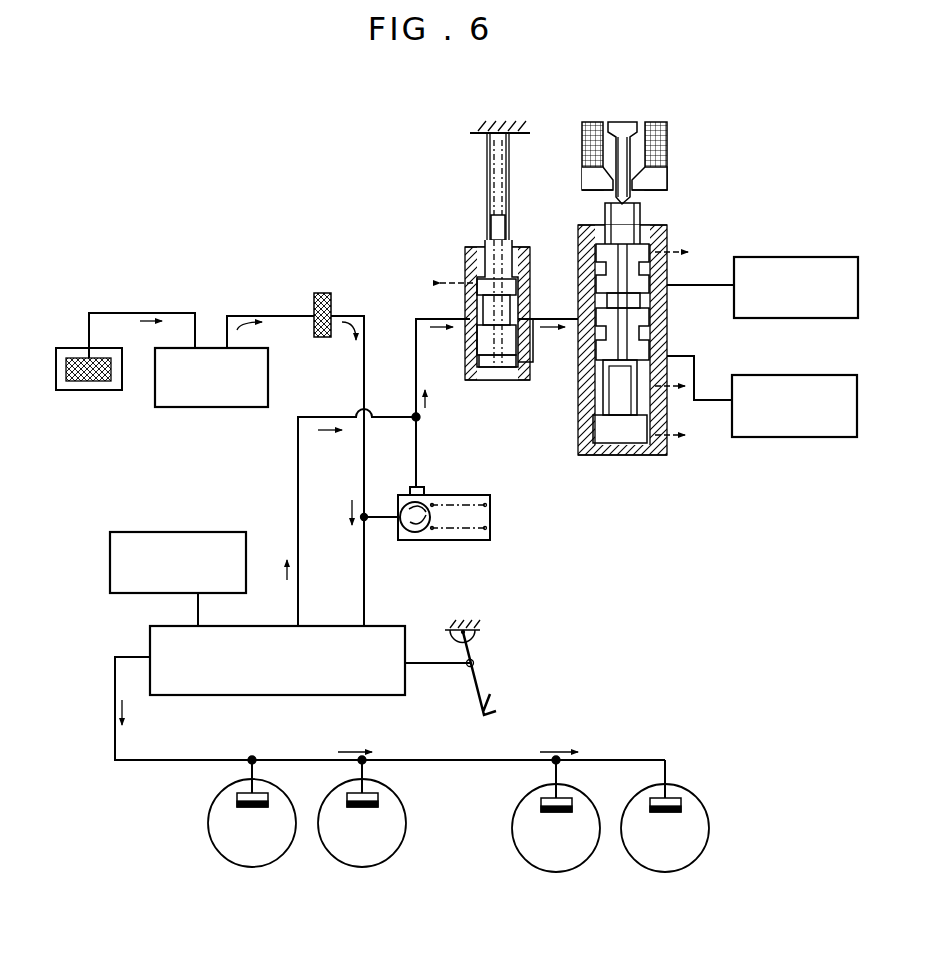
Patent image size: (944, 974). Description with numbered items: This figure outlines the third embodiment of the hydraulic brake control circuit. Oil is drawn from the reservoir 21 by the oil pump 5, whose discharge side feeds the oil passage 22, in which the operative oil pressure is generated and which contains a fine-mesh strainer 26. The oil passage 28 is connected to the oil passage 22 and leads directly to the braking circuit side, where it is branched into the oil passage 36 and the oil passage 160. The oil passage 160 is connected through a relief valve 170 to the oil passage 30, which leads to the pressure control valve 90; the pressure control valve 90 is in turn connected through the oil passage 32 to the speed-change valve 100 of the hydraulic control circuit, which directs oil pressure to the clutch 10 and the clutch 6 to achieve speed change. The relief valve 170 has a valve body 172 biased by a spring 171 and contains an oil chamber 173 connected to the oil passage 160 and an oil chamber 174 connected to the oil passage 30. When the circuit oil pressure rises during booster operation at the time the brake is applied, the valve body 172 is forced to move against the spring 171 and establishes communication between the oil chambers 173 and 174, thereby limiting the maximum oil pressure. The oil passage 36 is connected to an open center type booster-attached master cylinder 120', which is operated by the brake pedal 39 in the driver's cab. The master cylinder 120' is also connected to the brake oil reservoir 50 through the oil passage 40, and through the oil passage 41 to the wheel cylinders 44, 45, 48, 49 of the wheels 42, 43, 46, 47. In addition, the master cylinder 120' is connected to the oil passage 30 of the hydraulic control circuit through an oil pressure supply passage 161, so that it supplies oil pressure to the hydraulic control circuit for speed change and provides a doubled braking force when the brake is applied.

The oil pump 5 is at (158, 350).
The clutch 6 is at (756, 375).
The clutch 10 is at (747, 257).
The reservoir 21 is at (78, 348).
The oil passage 22 is at (282, 316).
The strainer 26 is at (332, 300).
The oil passage 28 is at (362, 395).
The oil passage 30 is at (416, 385).
The oil passage 32 is at (572, 318).
The oil passage 36 is at (362, 592).
The brake pedal 39 is at (478, 688).
The oil passage 40 is at (196, 603).
The oil passage 41 is at (114, 722).
The wheel 42 is at (222, 843).
The wheel 43 is at (338, 843).
The wheel cylinder 44 is at (268, 797).
The wheel cylinder 45 is at (378, 797).
The wheel 46 is at (527, 852).
The wheel 47 is at (642, 863).
The wheel cylinder 48 is at (572, 800).
The wheel cylinder 49 is at (681, 800).
The brake oil reservoir 50 is at (183, 532).
The pressure control valve 90 is at (462, 179).
The speed-change valve 100 is at (660, 104).
The open center type booster-attached master cylinder 120' is at (277, 646).
The oil passage 160 is at (380, 514).
The oil pressure supply passage 161 is at (296, 486).
The relief valve 170 is at (482, 476).
The spring 171 is at (485, 500).
The valve body 172 is at (420, 532).
The oil chamber 173 is at (400, 525).
The oil chamber 174 is at (416, 487).